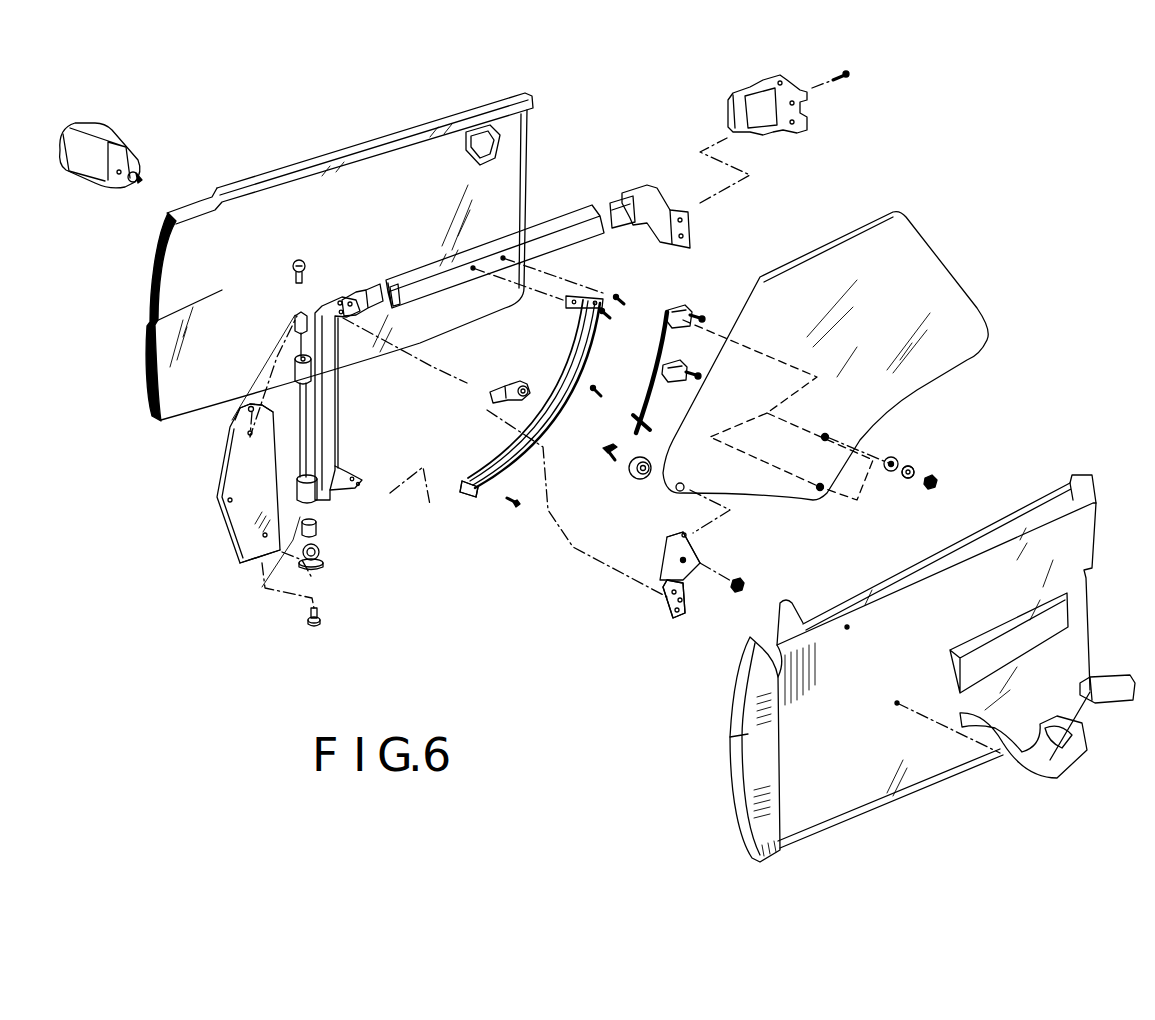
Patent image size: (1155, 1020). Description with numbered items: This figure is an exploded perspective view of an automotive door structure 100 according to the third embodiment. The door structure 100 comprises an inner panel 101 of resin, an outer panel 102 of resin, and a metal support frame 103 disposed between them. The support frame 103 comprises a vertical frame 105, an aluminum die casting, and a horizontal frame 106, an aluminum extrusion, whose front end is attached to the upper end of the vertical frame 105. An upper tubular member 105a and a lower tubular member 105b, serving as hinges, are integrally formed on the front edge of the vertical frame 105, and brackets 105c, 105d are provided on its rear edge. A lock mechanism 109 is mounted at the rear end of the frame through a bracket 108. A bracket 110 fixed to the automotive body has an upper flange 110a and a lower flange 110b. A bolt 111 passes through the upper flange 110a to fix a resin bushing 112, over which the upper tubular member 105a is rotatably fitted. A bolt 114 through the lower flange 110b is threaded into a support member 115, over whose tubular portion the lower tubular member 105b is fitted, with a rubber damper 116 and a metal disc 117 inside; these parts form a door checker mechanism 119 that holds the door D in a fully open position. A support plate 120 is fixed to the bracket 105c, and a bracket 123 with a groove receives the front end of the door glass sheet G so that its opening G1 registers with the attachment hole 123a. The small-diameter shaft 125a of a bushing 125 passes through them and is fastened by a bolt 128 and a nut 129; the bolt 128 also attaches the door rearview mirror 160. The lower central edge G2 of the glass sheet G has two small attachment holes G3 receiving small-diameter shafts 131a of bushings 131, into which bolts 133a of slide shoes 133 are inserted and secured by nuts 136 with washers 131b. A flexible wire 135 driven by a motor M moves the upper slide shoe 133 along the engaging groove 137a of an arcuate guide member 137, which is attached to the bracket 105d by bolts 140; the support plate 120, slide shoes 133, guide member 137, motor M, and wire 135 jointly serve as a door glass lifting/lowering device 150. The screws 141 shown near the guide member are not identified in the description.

The automotive door structure 100 is at (905, 158).
The inner panel 101 is at (1092, 608).
The outer panel 102 is at (514, 132).
The support frame 103 is at (327, 298).
The vertical frame 105 is at (328, 490).
The upper tubular member 105a is at (312, 373).
The lower tubular member 105b is at (290, 492).
The bracket 105c is at (346, 290).
The bracket 105d is at (360, 483).
The horizontal frame 106 is at (543, 222).
The bracket 108 is at (652, 186).
The lock mechanism 109 is at (790, 135).
The bracket 110 is at (222, 455).
The upper flange 110a is at (242, 407).
The lower flange 110b is at (238, 552).
The bolt 111 is at (290, 260).
The bushing 112 is at (288, 315).
The bolt 114 is at (310, 628).
The support member 115 is at (324, 560).
The rubber damper 116 is at (318, 530).
The disc 117 is at (262, 588).
The door checker mechanism 119 is at (323, 587).
The support plate 120 is at (687, 598).
The bracket 123 is at (700, 556).
The attachment hole 123a is at (682, 560).
The bushing 125 is at (636, 476).
The small-diameter shaft 125a is at (655, 462).
The bolt 128 is at (137, 183).
The nut 129 is at (745, 584).
The bushing 131 is at (910, 467).
The small-diameter shaft 131a is at (893, 457).
The washer 131b is at (908, 480).
The slide shoe 133 is at (673, 310).
The bolt 133a is at (692, 316).
The flexible wire 135 is at (658, 392).
The nut 136 is at (938, 479).
The guide member 137 is at (487, 410).
The engaging groove 137a is at (530, 477).
The bolt 140 is at (515, 508).
The screws 141 is at (619, 296).
The door glass lifting/lowering device 150 is at (477, 610).
The door rearview mirror 160 is at (80, 160).
The door D is at (155, 588).
The door glass sheet G is at (933, 250).
The opening G1 is at (678, 483).
The lower central edge G2 is at (820, 490).
The small attachment holes G3 is at (824, 436).
The motor M is at (520, 380).